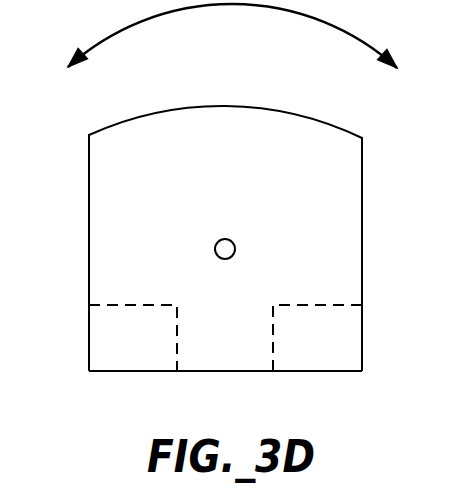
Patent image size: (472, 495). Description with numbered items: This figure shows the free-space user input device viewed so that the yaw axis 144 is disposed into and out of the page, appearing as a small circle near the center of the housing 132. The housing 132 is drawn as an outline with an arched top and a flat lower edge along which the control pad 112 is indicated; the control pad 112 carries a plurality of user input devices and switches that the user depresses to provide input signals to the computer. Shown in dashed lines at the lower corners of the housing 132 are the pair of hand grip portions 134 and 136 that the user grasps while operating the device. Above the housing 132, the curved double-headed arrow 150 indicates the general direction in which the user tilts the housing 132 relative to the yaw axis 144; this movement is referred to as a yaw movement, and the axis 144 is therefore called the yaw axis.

The arrow 150 is at (230, 6).
The housing portion 132 is at (149, 135).
The control pad 112 is at (227, 371).
The yaw axis 144 is at (236, 249).
The hand grip portion 134 is at (118, 304).
The hand grip portion 136 is at (330, 304).